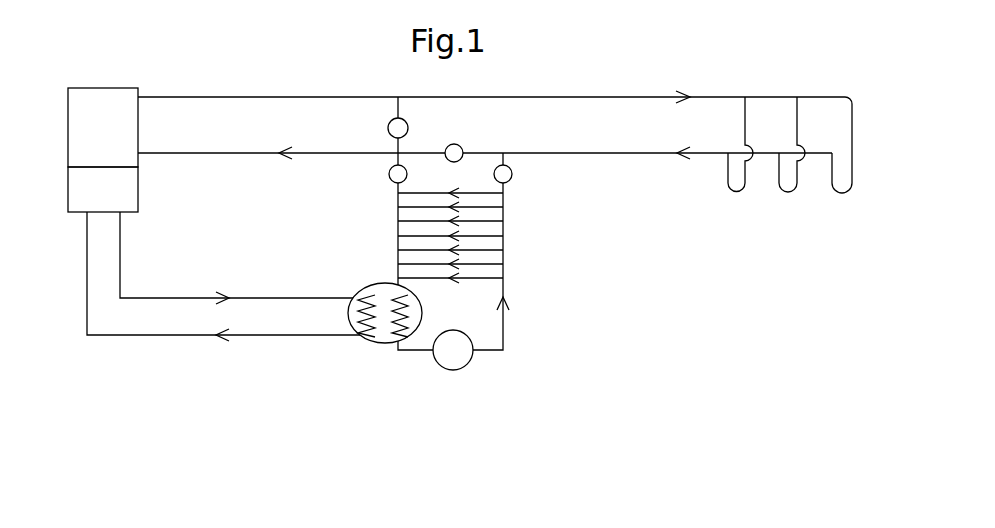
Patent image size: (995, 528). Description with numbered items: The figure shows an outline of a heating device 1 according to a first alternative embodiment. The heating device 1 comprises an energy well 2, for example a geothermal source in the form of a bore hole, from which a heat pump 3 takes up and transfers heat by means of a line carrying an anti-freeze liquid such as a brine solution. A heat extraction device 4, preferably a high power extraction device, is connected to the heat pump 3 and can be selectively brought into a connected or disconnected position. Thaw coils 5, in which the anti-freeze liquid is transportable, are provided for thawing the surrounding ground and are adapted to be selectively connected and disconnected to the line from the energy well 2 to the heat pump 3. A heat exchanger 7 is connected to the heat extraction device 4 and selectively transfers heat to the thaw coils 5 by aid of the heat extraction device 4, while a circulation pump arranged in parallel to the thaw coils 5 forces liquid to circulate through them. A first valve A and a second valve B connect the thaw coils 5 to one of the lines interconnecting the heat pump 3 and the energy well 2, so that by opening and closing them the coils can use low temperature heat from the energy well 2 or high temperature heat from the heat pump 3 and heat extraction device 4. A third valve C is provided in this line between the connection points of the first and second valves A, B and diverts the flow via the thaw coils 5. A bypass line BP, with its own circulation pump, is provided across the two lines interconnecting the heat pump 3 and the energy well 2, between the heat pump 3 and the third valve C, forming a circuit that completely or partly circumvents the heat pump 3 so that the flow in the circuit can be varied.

The heating device 1 is at (622, 215).
The energy well 2 is at (797, 205).
The heat pump 3 is at (118, 95).
The heat extraction device 4 is at (78, 192).
The thaw coils 5 is at (505, 229).
The heat exchanger 7 is at (383, 345).
The bypass line BP is at (380, 128).
The third valve C is at (454, 138).
The second valve B is at (386, 177).
The first valve A is at (515, 177).